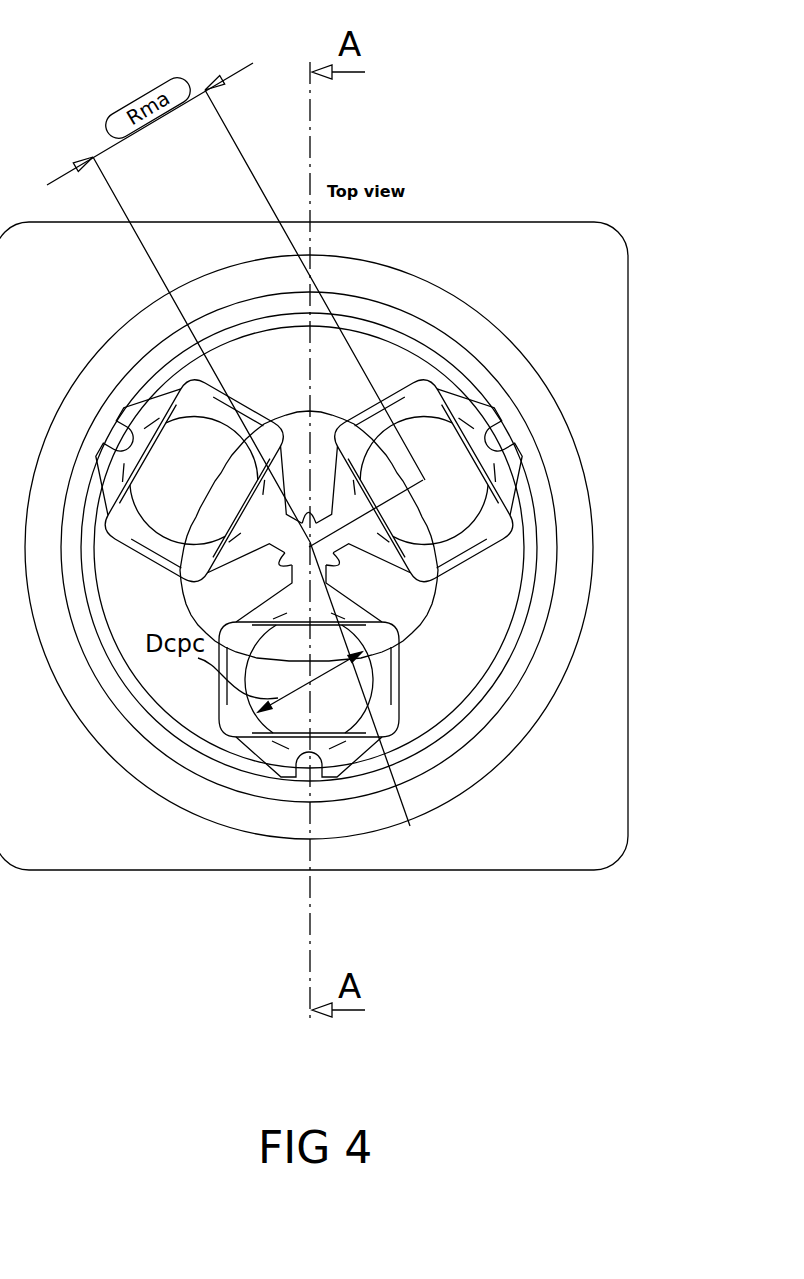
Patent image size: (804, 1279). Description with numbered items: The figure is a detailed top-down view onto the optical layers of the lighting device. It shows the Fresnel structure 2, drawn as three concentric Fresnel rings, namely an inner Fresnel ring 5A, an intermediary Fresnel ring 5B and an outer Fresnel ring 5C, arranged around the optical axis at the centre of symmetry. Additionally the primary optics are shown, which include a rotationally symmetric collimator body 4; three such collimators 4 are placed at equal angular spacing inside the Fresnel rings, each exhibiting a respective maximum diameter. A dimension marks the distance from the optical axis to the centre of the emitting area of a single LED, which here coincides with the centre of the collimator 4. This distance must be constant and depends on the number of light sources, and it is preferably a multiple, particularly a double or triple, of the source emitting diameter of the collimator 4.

The Fresnel structure 2 is at (630, 380).
The collimator body 4 is at (162, 540).
The inner Fresnel ring 5A is at (480, 397).
The intermediary Fresnel ring 5B is at (457, 355).
The outer Fresnel ring 5C is at (428, 290).